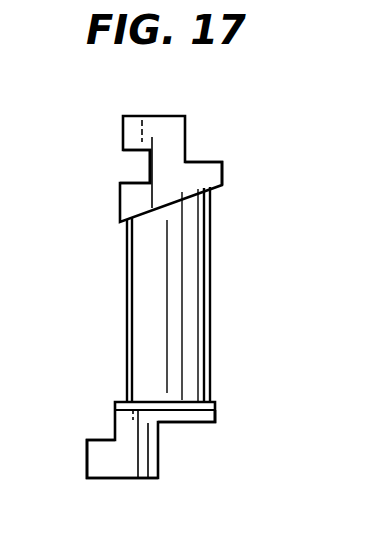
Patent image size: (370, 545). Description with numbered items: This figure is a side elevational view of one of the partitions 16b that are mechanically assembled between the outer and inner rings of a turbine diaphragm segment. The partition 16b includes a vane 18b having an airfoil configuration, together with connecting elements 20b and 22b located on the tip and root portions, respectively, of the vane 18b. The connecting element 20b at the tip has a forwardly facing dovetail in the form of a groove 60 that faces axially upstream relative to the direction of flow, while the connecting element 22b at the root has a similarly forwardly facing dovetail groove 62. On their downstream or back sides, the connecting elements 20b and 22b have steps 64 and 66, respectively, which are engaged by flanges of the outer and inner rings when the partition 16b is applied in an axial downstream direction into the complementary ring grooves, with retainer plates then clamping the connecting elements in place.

The connecting element 20b is at (170, 117).
The step 64 is at (190, 143).
The dovetail groove 60 is at (148, 170).
The vane 18b is at (148, 272).
The partition 16b is at (127, 313).
The dovetail groove 62 is at (103, 437).
The step 66 is at (177, 423).
The connecting element 22b is at (158, 462).